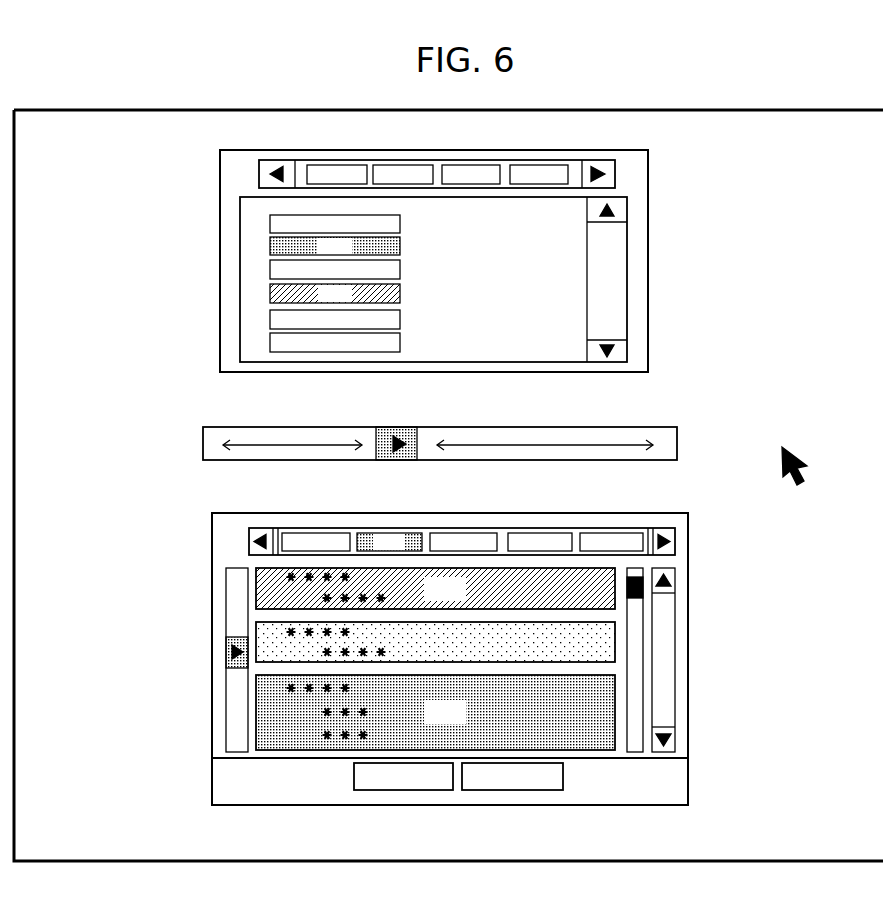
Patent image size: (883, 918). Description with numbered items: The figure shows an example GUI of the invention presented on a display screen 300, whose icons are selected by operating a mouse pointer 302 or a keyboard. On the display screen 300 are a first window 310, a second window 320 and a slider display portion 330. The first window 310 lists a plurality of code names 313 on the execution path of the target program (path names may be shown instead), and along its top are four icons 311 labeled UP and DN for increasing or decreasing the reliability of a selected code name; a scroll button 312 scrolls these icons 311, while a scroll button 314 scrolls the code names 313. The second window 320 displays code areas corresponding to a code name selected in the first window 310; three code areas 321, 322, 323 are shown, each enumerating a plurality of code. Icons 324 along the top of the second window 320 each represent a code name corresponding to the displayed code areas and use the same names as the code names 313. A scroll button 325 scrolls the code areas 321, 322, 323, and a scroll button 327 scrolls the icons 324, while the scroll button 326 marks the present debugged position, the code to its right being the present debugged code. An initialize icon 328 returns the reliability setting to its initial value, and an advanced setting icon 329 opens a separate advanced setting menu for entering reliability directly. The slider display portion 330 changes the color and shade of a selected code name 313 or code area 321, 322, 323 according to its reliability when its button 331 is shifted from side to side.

The display screen 300 is at (802, 172).
The mouse pointer 302 is at (805, 462).
The first window 310 is at (648, 245).
The icons 311 is at (367, 162).
The scroll button 312 is at (616, 175).
The code names 313 is at (400, 296).
The scroll button 314 is at (627, 341).
The second window 320 is at (690, 655).
The code area 321 is at (428, 601).
The code area 322 is at (428, 654).
The code area 323 is at (428, 723).
The icons 324 is at (461, 528).
The scroll button 325 is at (678, 581).
The scroll button 326 is at (228, 638).
The scroll button 327 is at (680, 544).
The initialize icon 328 is at (411, 791).
The advanced setting icon 329 is at (526, 791).
The slider display portion 330 is at (680, 440).
The button 331 is at (402, 429).